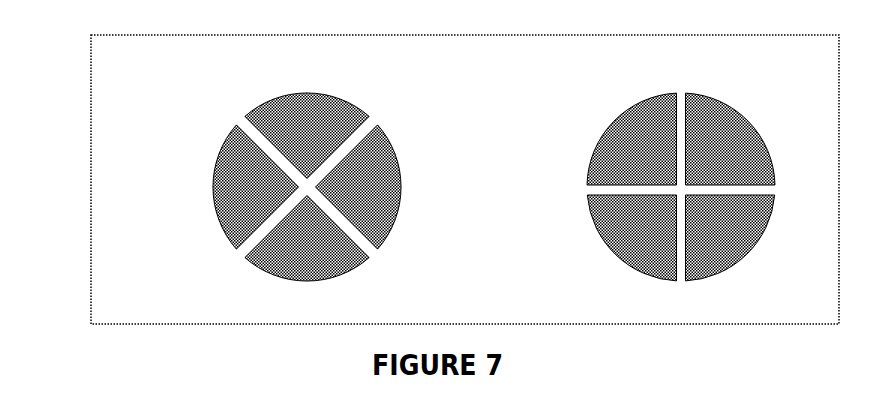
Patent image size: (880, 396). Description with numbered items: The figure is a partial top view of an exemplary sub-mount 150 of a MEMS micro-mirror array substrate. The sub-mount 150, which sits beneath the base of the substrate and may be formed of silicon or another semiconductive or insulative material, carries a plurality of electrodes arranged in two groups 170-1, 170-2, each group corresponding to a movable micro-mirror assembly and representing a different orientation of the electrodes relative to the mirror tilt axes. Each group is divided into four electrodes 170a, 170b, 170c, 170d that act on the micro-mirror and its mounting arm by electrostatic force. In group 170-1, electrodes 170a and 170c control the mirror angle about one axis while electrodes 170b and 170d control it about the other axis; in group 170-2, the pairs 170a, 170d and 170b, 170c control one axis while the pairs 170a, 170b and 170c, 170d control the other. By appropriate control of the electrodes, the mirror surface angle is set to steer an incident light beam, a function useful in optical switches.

The sub-mount 150 is at (107, 264).
The electrode group 170-1 is at (232, 165).
The electrode group 170-2 is at (605, 165).
The electrode 170a is at (292, 113).
The electrode 170b is at (368, 178).
The electrode 170c is at (308, 252).
The electrode 170d is at (228, 195).